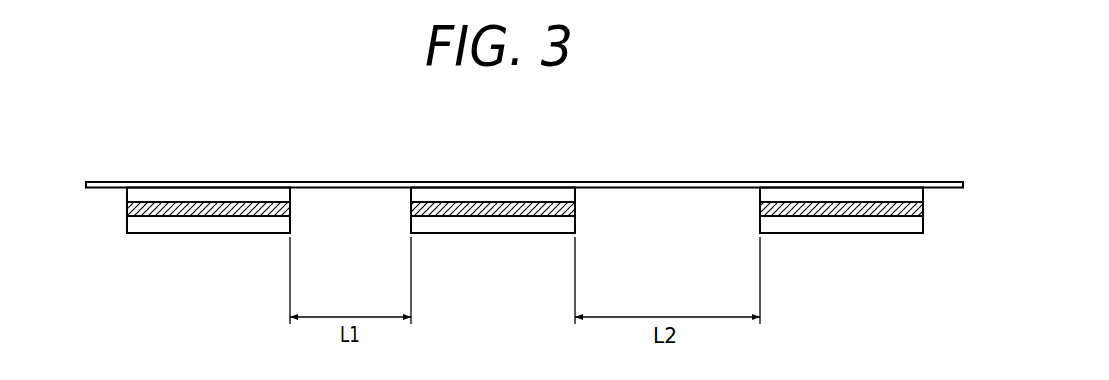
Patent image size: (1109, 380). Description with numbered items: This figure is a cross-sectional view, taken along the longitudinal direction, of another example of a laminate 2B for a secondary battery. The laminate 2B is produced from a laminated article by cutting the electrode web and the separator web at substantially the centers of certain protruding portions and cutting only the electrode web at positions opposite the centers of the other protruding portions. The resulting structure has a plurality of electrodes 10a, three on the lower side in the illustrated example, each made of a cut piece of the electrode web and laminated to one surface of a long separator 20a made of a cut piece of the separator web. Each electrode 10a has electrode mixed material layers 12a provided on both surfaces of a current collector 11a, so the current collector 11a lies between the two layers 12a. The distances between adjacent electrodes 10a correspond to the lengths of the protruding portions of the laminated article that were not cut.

The laminate for a secondary battery 2B is at (708, 137).
The separator 20a is at (612, 185).
The electrode 10a is at (515, 258).
The current collector 11a is at (273, 282).
The electrode mixed material layer 12a is at (157, 195).